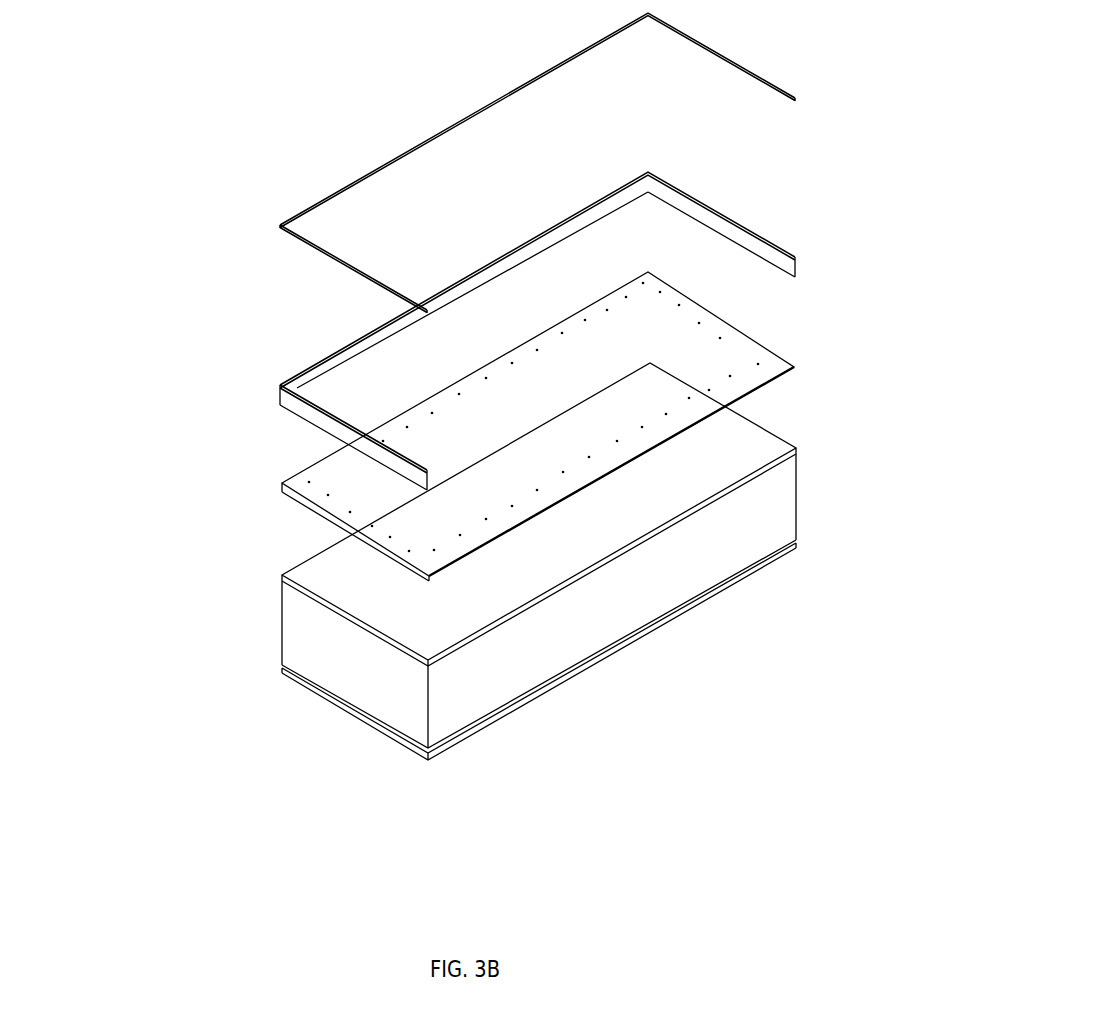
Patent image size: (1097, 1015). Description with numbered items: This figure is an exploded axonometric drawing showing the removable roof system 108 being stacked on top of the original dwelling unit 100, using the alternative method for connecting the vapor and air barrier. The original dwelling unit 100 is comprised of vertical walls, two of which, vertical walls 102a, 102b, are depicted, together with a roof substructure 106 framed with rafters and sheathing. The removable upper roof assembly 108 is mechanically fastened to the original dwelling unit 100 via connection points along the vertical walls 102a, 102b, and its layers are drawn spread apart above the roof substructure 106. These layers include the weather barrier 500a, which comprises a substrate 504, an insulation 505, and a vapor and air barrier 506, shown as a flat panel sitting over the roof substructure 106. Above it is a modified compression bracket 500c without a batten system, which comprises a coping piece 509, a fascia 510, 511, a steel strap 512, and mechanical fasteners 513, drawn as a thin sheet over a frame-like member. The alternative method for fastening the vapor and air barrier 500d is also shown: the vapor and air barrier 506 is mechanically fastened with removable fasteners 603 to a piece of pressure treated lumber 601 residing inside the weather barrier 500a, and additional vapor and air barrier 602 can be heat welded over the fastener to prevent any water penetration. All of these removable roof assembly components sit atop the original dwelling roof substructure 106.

The original dwelling unit 100 is at (320, 753).
The vertical wall 102a is at (278, 606).
The vertical wall 102b is at (548, 662).
The roof substructure 106 is at (768, 435).
The removable upper roof assembly 108 is at (847, 233).
The weather barrier 500a is at (125, 512).
The modified compression bracket 500c is at (133, 113).
The alternative method for fastening the vapor and air barrier 500d is at (133, 398).
The substrate 504 is at (282, 493).
The insulation 505 is at (464, 426).
The vapor and air barrier 506 is at (464, 426).
The coping piece 509 is at (354, 178).
The fascia 510 is at (322, 358).
The fascia 511 is at (463, 331).
The steel strap 512 is at (463, 331).
The mechanical fasteners 513 is at (488, 331).
The pressure treated lumber 601 is at (338, 468).
The additional vapor and air barrier 602 is at (447, 417).
The removable fasteners 603 is at (447, 417).